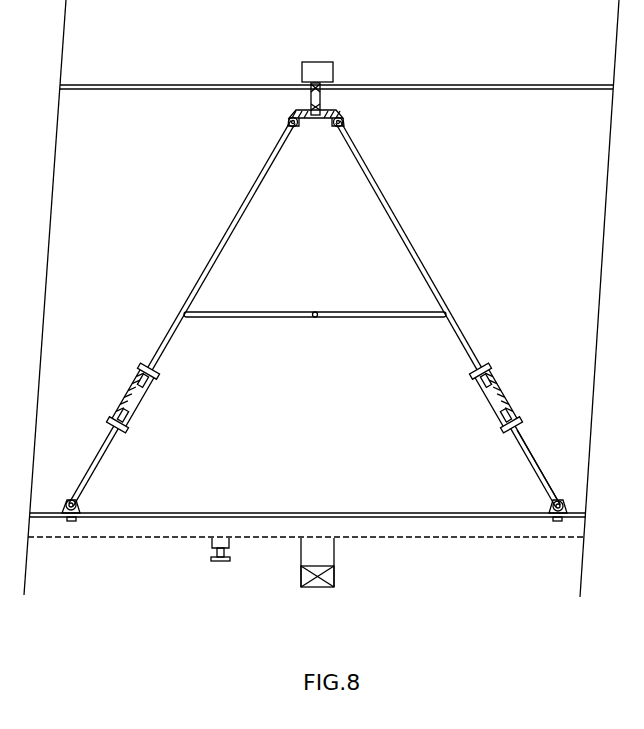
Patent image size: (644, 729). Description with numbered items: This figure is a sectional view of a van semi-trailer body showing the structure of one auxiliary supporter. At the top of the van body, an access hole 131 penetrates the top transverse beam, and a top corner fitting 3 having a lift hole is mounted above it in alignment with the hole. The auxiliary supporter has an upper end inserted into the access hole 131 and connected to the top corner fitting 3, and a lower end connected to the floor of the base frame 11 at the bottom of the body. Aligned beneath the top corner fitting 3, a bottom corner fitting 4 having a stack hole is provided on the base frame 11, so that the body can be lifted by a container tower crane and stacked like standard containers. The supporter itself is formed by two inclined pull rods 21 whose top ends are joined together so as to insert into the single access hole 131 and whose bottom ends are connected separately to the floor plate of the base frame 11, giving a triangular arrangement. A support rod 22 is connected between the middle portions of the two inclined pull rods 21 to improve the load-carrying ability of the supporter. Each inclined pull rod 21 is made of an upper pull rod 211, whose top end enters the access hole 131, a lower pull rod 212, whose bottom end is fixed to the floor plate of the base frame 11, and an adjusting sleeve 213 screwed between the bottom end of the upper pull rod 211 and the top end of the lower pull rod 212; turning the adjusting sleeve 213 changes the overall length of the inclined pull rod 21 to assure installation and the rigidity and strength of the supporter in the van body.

The top corner fitting 3 is at (322, 72).
The access hole 131 is at (328, 84).
The base frame 11 is at (408, 524).
The bottom corner fitting 4 is at (318, 550).
The inclined pull rod 21 is at (322, 315).
The upper pull rod 211 is at (398, 222).
The lower pull rod 212 is at (534, 457).
The adjusting sleeve 213 is at (503, 389).
The support rod 22 is at (357, 318).